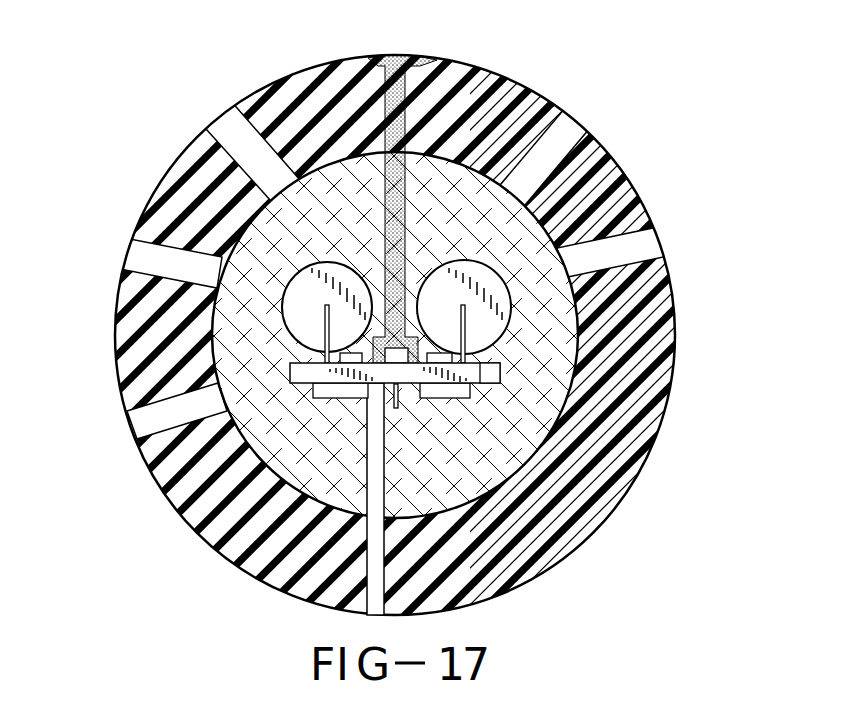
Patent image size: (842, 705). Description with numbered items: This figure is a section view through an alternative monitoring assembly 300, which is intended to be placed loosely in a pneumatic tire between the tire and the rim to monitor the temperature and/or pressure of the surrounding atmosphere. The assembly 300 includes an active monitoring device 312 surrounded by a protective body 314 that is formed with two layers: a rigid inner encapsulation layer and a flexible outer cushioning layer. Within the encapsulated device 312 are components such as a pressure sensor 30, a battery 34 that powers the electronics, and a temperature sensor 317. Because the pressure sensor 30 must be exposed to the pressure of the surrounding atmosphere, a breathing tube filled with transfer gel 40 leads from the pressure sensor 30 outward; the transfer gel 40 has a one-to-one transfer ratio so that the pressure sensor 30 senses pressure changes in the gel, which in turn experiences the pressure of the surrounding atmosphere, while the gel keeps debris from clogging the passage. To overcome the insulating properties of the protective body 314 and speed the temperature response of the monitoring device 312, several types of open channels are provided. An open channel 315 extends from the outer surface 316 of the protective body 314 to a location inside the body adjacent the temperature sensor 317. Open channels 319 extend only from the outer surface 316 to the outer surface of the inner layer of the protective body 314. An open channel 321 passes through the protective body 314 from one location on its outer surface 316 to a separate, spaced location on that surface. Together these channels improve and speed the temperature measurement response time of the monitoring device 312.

The monitoring assembly 300 is at (421, 352).
The transfer gel 40 is at (396, 54).
The battery 34 is at (303, 290).
The pressure sensor 30 is at (403, 350).
The active monitoring device 312 is at (502, 377).
The outer surface 316 is at (678, 334).
The open channels 319 is at (229, 124).
The protective body 314 is at (421, 352).
The open channel 315 is at (377, 560).
The temperature sensor 317 is at (370, 389).
The open channel 321 is at (583, 478).